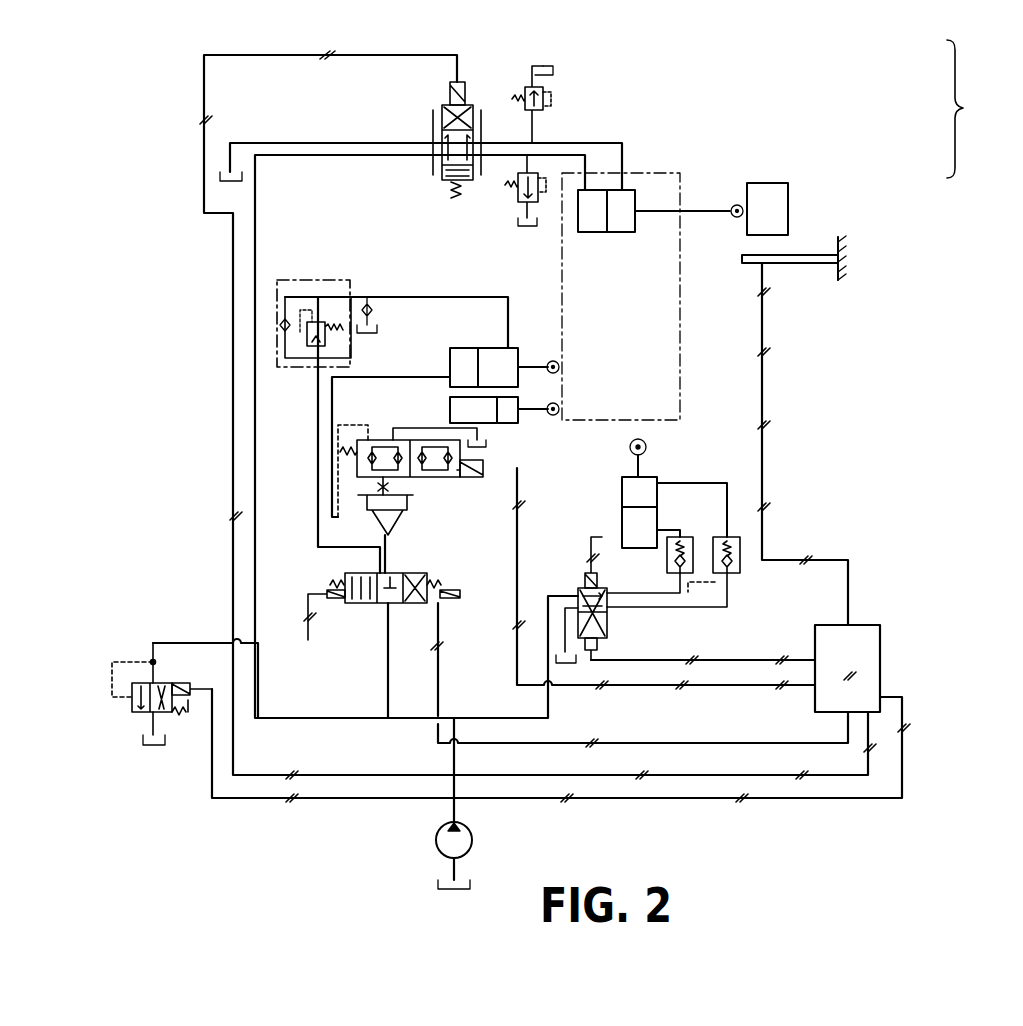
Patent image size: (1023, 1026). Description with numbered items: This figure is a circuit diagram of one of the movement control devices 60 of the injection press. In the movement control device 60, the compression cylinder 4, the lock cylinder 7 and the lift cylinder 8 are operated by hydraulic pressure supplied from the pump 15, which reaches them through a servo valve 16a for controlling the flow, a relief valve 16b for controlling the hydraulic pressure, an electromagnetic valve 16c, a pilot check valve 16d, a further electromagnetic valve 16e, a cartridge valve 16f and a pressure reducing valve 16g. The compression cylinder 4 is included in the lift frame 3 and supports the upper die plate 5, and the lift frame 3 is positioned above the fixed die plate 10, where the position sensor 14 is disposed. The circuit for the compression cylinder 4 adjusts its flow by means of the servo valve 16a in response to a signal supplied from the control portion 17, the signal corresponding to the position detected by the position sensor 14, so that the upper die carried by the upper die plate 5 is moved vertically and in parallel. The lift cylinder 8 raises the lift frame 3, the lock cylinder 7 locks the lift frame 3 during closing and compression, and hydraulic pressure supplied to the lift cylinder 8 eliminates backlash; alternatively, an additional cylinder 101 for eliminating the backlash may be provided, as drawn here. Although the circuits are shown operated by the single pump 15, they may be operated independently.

The servo valve 16a is at (468, 98).
The compression cylinder 4 is at (625, 190).
The position sensor 14 is at (807, 255).
The control portion 17 is at (872, 625).
The movement control device 60 is at (974, 109).
The die plate 10 is at (845, 262).
The lift frame 3 is at (648, 173).
The upper die plate 5 is at (763, 183).
The pressure reducing valve 16g is at (312, 280).
The lift cylinder 8 is at (462, 347).
The cylinder 101 is at (510, 423).
The cartridge valve 16f is at (407, 505).
The electromagnetic valve 16e is at (365, 605).
The lock cylinder 7 is at (655, 478).
The pilot check valve 16d is at (727, 575).
The electromagnetic valve 16c is at (607, 625).
The relief valve 16b is at (130, 718).
The pump 15 is at (473, 838).